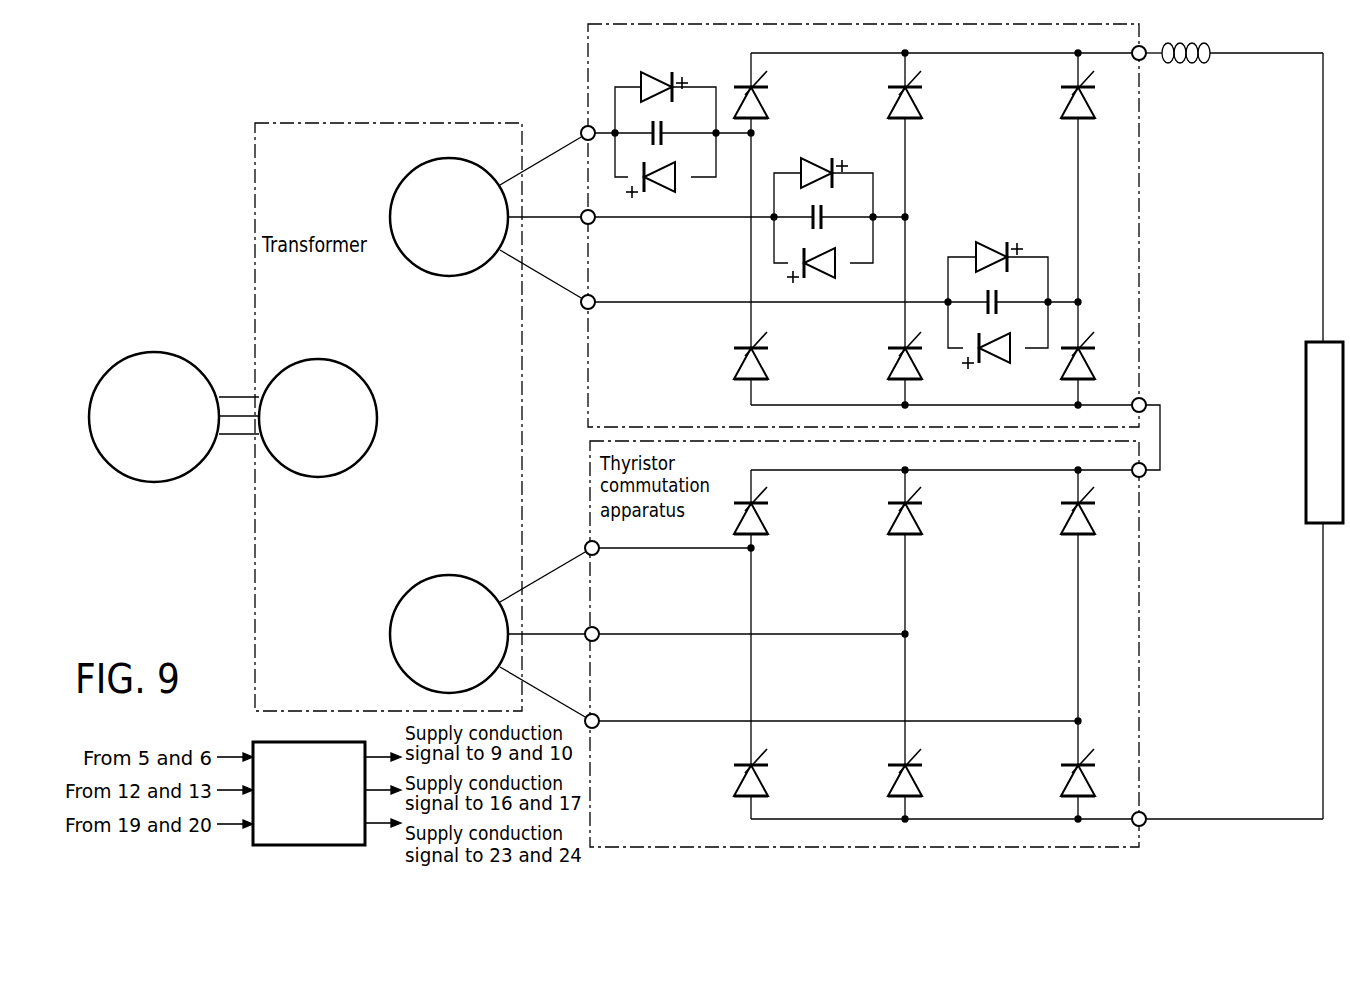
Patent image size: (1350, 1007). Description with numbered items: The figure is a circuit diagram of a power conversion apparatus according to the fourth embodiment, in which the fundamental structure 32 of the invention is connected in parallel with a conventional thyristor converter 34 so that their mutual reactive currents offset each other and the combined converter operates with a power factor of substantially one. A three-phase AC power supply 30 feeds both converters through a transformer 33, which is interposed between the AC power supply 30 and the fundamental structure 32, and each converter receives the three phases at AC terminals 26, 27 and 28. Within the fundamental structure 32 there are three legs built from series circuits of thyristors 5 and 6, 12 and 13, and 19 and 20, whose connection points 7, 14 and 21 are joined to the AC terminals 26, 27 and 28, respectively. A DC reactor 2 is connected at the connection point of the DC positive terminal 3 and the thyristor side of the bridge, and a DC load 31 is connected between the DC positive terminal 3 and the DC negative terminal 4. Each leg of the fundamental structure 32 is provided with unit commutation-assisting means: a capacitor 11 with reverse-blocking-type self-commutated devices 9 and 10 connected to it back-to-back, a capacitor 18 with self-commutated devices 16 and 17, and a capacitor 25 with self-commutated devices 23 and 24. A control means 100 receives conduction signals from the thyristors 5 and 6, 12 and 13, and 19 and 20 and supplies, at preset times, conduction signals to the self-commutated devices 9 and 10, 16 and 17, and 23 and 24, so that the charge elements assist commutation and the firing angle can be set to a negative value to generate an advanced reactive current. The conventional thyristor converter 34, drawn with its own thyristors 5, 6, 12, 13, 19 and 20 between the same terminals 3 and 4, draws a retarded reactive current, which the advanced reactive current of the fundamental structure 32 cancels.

The DC reactor 2 is at (1190, 64).
The DC positive terminal 3 is at (1144, 50).
The DC negative terminal 4 is at (1144, 400).
The thyristor 5 is at (768, 364).
The thyristor 6 is at (768, 103).
The connection point 7 is at (753, 135).
The self-commutated device 9 is at (676, 186).
The self-commutated device 10 is at (686, 84).
The capacitor 11 is at (662, 126).
The thyristor 12 is at (890, 362).
The thyristor 13 is at (922, 103).
The connection point 14 is at (907, 218).
The self-commutated device 16 is at (836, 270).
The self-commutated device 17 is at (848, 170).
The capacitor 18 is at (822, 210).
The thyristor 19 is at (1095, 365).
The thyristor 20 is at (1095, 103).
The connection point 21 is at (1081, 305).
The self-commutated device 23 is at (1010, 355).
The self-commutated device 24 is at (1020, 254).
The capacitor 25 is at (996, 293).
The AC terminal 26 is at (584, 128).
The AC terminal 27 is at (584, 213).
The AC terminal 28 is at (586, 308).
The three-phase AC power supply 30 is at (154, 351).
The DC load 31 is at (1305, 366).
The fundamental structure 32 is at (584, 46).
The transformer 33 is at (457, 123).
The thyristor commutation apparatus 34 is at (584, 463).
The control means 100 is at (327, 742).